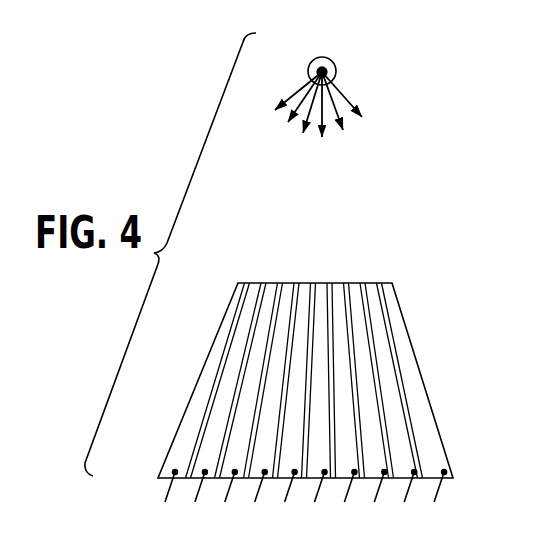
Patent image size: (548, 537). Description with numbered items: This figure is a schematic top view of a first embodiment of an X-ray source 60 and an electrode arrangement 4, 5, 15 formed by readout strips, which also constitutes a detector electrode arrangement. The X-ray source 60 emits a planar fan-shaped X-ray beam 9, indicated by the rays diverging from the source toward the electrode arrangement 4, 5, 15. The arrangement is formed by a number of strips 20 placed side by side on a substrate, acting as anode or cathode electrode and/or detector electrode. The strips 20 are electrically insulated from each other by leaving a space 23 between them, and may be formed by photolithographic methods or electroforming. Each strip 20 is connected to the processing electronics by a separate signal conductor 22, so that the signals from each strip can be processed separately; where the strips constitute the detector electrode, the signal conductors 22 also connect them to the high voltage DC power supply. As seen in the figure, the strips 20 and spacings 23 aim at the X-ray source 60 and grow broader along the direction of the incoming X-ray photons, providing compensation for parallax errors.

The X-ray source 60 is at (334, 65).
The planar X-ray beam 9 is at (352, 92).
The electrode arrangement 4 is at (321, 354).
The electrode arrangement 5 is at (321, 354).
The electrode arrangement 15 is at (407, 284).
The space 23 is at (283, 280).
The strips 20 is at (352, 287).
The signal conductor 22 is at (441, 494).